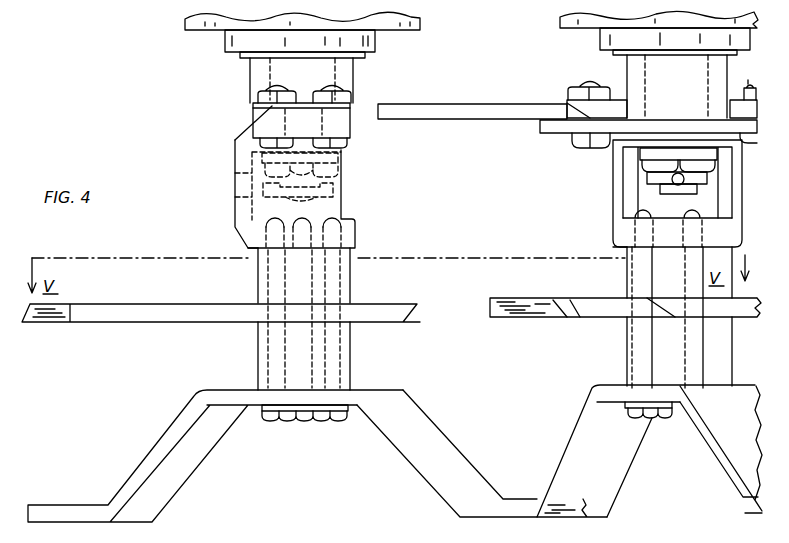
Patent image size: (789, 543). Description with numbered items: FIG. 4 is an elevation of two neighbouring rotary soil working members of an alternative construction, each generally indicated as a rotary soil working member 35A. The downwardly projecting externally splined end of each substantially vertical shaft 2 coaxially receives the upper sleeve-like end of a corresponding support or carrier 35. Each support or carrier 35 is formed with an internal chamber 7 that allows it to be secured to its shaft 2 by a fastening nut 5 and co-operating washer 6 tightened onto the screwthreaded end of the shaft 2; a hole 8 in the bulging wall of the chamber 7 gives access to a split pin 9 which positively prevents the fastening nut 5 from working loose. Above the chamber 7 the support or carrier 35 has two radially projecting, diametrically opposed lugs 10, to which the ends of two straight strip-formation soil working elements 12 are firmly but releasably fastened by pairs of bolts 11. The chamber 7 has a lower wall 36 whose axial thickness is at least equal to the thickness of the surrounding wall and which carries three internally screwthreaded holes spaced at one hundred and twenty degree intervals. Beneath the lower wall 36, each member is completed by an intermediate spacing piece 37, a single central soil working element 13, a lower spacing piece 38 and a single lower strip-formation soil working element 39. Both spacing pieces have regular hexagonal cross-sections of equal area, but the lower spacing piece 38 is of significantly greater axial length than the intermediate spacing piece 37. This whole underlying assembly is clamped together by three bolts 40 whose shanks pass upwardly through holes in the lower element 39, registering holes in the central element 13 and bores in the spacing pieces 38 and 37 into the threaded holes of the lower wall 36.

The shaft 2 is at (328, 62).
The fastening nut 5 is at (342, 172).
The washer 6 is at (342, 150).
The internal chamber 7 is at (330, 208).
The hole 8 is at (235, 183).
The split pin 9 is at (337, 192).
The lug 10 is at (352, 125).
The bolt 11 is at (306, 102).
The soil working element 12 is at (350, 113).
The soil working element 13 is at (131, 321).
The support or carrier 35 is at (245, 122).
The rotary soil working member 35A is at (258, 282).
The lower wall 36 is at (355, 241).
The intermediate spacing piece 37 is at (353, 291).
The lower spacing piece 38 is at (352, 363).
The lower soil working element 39 is at (430, 425).
The bolt 40 is at (315, 430).